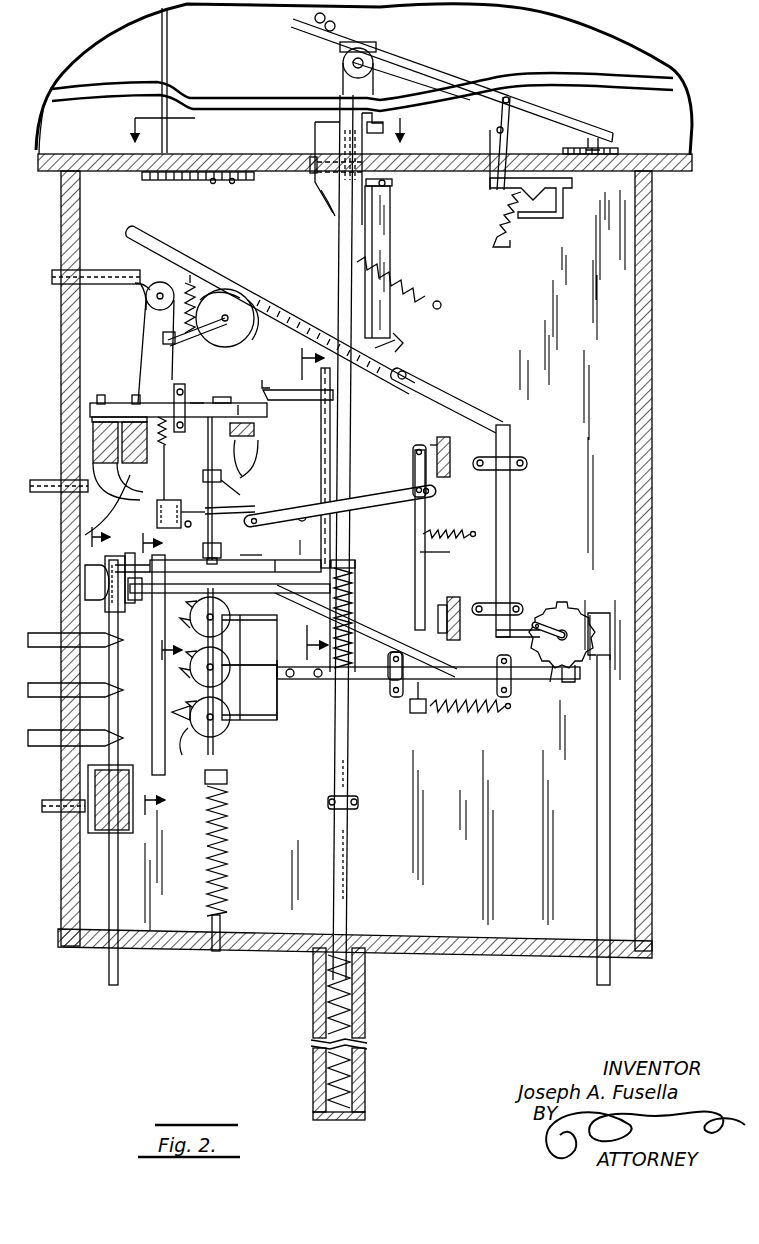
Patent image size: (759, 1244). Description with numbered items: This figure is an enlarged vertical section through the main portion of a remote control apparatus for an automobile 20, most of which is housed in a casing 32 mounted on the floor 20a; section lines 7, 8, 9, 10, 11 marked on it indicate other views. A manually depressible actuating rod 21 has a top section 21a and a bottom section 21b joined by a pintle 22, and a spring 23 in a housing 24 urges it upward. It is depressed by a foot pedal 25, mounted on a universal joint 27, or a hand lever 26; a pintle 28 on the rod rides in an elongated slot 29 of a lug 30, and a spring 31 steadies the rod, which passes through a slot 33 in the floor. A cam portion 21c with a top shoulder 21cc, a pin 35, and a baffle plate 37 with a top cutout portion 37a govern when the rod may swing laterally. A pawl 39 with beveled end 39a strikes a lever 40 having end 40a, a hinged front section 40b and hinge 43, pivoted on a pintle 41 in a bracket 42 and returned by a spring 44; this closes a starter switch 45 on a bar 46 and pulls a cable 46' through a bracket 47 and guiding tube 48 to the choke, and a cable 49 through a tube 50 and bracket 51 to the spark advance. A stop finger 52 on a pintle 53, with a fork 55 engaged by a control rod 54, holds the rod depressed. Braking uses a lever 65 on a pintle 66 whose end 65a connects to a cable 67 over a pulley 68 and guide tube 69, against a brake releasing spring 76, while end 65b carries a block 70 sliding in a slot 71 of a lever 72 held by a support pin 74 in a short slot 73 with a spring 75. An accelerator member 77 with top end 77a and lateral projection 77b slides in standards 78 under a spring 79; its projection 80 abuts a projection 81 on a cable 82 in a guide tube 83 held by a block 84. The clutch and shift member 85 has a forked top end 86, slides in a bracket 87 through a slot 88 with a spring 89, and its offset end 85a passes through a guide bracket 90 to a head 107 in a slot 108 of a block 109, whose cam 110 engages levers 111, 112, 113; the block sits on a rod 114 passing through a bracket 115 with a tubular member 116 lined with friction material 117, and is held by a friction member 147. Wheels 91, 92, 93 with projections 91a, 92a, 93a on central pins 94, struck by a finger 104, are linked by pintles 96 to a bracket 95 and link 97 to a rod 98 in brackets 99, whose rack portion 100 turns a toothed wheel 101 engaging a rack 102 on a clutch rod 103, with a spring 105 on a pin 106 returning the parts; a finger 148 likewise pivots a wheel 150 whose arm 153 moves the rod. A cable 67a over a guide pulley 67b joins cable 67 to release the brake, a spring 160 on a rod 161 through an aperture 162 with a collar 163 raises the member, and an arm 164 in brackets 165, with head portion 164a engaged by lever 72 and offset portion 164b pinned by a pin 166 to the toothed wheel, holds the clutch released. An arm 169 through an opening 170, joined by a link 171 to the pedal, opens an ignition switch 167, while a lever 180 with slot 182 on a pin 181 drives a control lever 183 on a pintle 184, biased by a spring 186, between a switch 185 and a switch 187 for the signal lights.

The automobile 20 is at (684, 156).
The floor 20a is at (93, 153).
The actuating rod 21 is at (339, 244).
The top section 21a is at (352, 772).
The bottom section 21b is at (351, 853).
The cam portion 21c is at (322, 206).
The top shoulder 21cc is at (302, 129).
The pintle 22 is at (362, 803).
The spring 23 is at (364, 1010).
The housing 24 is at (365, 1080).
The foot pedal 25 is at (446, 73).
The hand lever 26 is at (340, 12).
The universal joint 27 is at (590, 138).
The pintle 28 is at (372, 38).
The elongated slot 29 is at (395, 62).
The lug 30 is at (340, 47).
The spring 31 is at (405, 288).
The casing 32 is at (656, 220).
The slot 33 is at (315, 154).
The pin 35 is at (370, 128).
The baffle plate 37 is at (392, 241).
The top cutout portion 37a is at (392, 196).
The pawl 39 is at (290, 402).
The connecting end 39a is at (262, 406).
The lever 40 is at (92, 409).
The connecting end 40a is at (272, 406).
The front section 40b is at (238, 404).
The pintle 41 is at (196, 403).
The bracket 42 is at (174, 393).
The hinge 43 is at (222, 403).
The spring 44 is at (176, 451).
The switch 45 is at (252, 438).
The bar 46 is at (253, 465).
The cable 46' is at (115, 382).
The bracket 47 is at (122, 451).
The guiding tube 48 is at (50, 494).
The cable 49 is at (92, 413).
The tube 50 is at (85, 472).
The bracket 51 is at (93, 441).
The stop finger 52 is at (212, 182).
The pintle 53 is at (232, 182).
The control rod 54 is at (168, 48).
The fork 55 is at (138, 182).
The lever 65 is at (228, 289).
The lever end 65a is at (177, 346).
The lever end 65b is at (260, 306).
The pintle 66 is at (215, 331).
The cable 67 is at (135, 263).
The cable 67a is at (150, 291).
The guide pulley 67b is at (65, 536).
The guiding pulley 68 is at (158, 283).
The guide tube 69 is at (60, 269).
The block 70 is at (242, 295).
The slot 71 is at (160, 234).
The lever 72 is at (415, 381).
The short slot 73 is at (388, 369).
The support pin 74 is at (380, 346).
The spring 75 is at (282, 307).
The brake releasing spring 76 is at (178, 335).
The member 77 is at (211, 463).
The top end 77a is at (168, 433).
The lateral projection 77b is at (268, 557).
The standards 78 is at (221, 491).
The spring 79 is at (240, 496).
The projection 80 is at (203, 479).
The projection 81 is at (200, 515).
The cable 82 is at (158, 503).
The guide tube 83 is at (158, 517).
The block 84 is at (184, 527).
The member 85 is at (332, 451).
The offset end 85a is at (250, 556).
The forked top end 86 is at (332, 426).
The bracket 87 is at (292, 569).
The slot 88 is at (355, 581).
The spring 89 is at (355, 606).
The guide bracket 90 is at (153, 687).
The wheel 91 is at (226, 625).
The projection 91a is at (230, 641).
The wheel 92 is at (226, 676).
The projection 92a is at (230, 691).
The wheel 93 is at (226, 736).
The projection 93a is at (196, 736).
The central pin 94 is at (196, 706).
The bracket 95 is at (268, 706).
The pintles 96 is at (240, 621).
The link 97 is at (292, 685).
The rod 98 is at (392, 698).
The brackets 99 is at (503, 659).
The rack portion 100 is at (562, 691).
The toothed wheel 101 is at (580, 614).
The rack 102 is at (610, 627).
The rod 103 is at (610, 721).
The finger 104 is at (252, 511).
The spring 105 is at (460, 713).
The pin 106 is at (418, 713).
The head 107 is at (105, 557).
The slot 108 is at (110, 586).
The block 109 is at (100, 576).
The cam 110 is at (130, 606).
The lever 111 is at (85, 649).
The lever 112 is at (85, 699).
The lever 113 is at (85, 749).
The rod 114 is at (118, 891).
The bracket 115 is at (135, 783).
The tubular member 116 is at (130, 827).
The friction material 117 is at (118, 846).
The friction member 147 is at (87, 581).
The finger 148 is at (130, 601).
The wheel 150 is at (222, 597).
The arm 153 is at (388, 666).
The spring 160 is at (228, 813).
The rod 161 is at (228, 861).
The aperture 162 is at (225, 918).
The collar 163 is at (228, 778).
The arm 164 is at (508, 503).
The head portion 164a is at (466, 406).
The offset portion 164b is at (560, 621).
The brackets 165 is at (524, 461).
The pin 166 is at (548, 683).
The switch 167 is at (542, 171).
The arm 169 is at (490, 190).
The opening 170 is at (492, 156).
The link 171 is at (496, 115).
The lever 180 is at (414, 491).
The pin 181 is at (375, 505).
The slot 182 is at (302, 516).
The control lever 183 is at (428, 551).
The pintle 184 is at (432, 496).
The switch 185 is at (437, 446).
The spring 186 is at (450, 531).
The switch 187 is at (449, 598).
The section line 7 is at (306, 504).
The section line 8 is at (148, 675).
The section line 9 is at (101, 532).
The section line 10 is at (176, 641).
The section line 11 is at (262, 129).